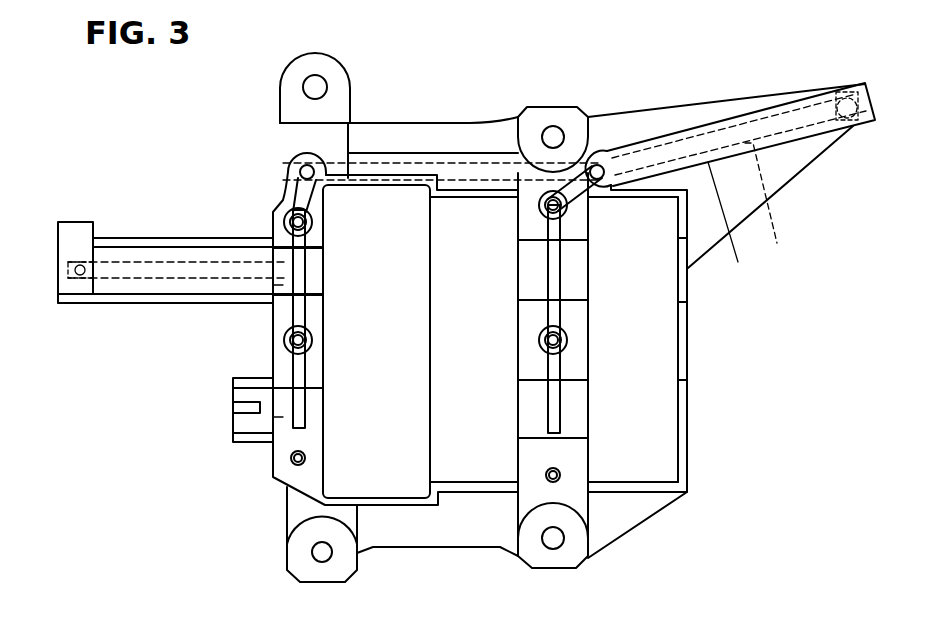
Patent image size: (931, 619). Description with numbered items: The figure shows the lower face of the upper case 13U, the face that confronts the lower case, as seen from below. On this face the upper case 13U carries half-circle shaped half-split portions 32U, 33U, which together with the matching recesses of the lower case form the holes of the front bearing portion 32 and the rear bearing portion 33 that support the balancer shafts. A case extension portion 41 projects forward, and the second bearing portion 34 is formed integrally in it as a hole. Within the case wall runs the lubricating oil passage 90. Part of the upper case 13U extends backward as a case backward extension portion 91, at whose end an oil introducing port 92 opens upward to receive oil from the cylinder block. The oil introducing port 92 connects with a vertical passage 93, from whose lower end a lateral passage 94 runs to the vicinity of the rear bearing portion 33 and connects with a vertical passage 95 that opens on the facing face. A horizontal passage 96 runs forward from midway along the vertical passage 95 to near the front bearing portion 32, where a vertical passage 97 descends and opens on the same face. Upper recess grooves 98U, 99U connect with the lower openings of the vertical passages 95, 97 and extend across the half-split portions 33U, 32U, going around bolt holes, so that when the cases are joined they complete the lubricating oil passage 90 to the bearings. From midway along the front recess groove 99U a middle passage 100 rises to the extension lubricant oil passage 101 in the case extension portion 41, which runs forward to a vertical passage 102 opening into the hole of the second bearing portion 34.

The upper case 13U is at (602, 107).
The lubricating oil passage 90 is at (760, 107).
The case backward extension portion 91 is at (770, 209).
The oil introducing port 92 is at (849, 95).
The vertical passage 93 is at (848, 122).
The lateral passage 94 is at (769, 209).
The vertical passage 95 is at (599, 180).
The horizontal passage 96 is at (463, 155).
The vertical passage 97 is at (300, 165).
The upper recess groove 98U is at (566, 324).
The upper recess groove 99U is at (308, 326).
The middle passage 100 is at (297, 272).
The extension lubricant oil passage 101 is at (150, 262).
The vertical passage 102 is at (78, 266).
The second bearing portion 34 is at (57, 297).
The case extension portion 41 is at (109, 305).
The front bearing portion 32 is at (272, 285).
The rear bearing portion 33 is at (519, 282).
The half-split portion 32U is at (316, 278).
The half-split portion 33U is at (583, 270).